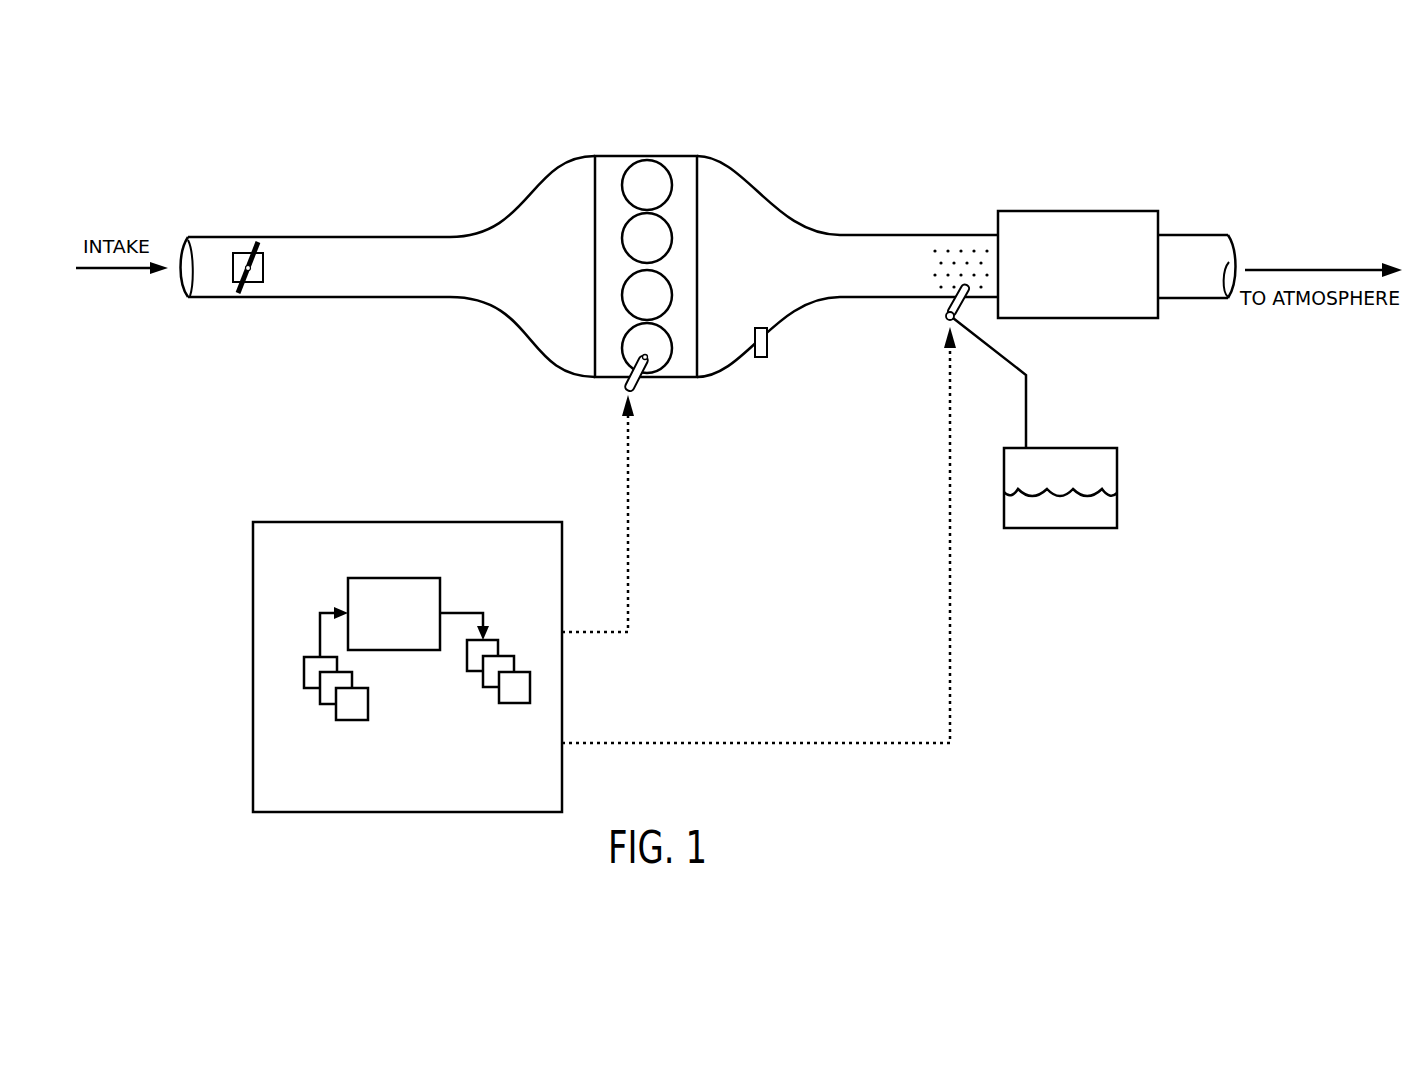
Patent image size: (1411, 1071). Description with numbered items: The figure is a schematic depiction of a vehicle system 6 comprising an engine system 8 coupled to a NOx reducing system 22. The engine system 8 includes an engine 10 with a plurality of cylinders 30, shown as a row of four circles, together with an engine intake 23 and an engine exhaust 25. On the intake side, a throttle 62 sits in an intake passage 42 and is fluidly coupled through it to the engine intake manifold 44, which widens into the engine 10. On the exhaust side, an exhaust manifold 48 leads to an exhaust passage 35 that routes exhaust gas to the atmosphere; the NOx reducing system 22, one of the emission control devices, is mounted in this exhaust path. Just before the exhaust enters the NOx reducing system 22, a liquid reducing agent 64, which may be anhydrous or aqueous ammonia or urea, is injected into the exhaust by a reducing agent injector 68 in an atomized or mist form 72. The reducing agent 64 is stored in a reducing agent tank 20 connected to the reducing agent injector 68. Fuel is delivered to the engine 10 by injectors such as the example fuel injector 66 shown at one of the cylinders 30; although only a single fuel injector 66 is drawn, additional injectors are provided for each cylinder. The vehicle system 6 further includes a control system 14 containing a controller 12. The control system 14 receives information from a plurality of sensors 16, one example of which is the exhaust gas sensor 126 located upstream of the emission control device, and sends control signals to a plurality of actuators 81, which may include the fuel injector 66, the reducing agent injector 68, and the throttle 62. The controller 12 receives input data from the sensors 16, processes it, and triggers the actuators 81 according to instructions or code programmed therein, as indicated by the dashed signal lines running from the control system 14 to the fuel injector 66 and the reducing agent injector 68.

The vehicle system 6 is at (268, 152).
The engine system 8 is at (828, 118).
The engine 10 is at (698, 248).
The controller 12 is at (394, 614).
The control system 14 is at (357, 522).
The sensors 16 is at (292, 727).
The reducing agent tank 20 is at (1117, 515).
The NOx reducing system 22 is at (1078, 264).
The engine intake 23 is at (391, 213).
The engine exhaust 25 is at (1054, 170).
The cylinders 30 is at (665, 176).
The exhaust passage 35 is at (1178, 235).
The intake passage 42 is at (298, 301).
The engine intake manifold 44 is at (565, 277).
The exhaust manifold 48 is at (778, 277).
The throttle 62 is at (263, 277).
The reducing agent 64 is at (1060, 497).
The fuel injector 66 is at (636, 381).
The reducing agent injector 68 is at (944, 317).
The atomized or mist form 72 is at (967, 246).
The actuators 81 is at (457, 707).
The exhaust gas sensor 126 is at (767, 338).